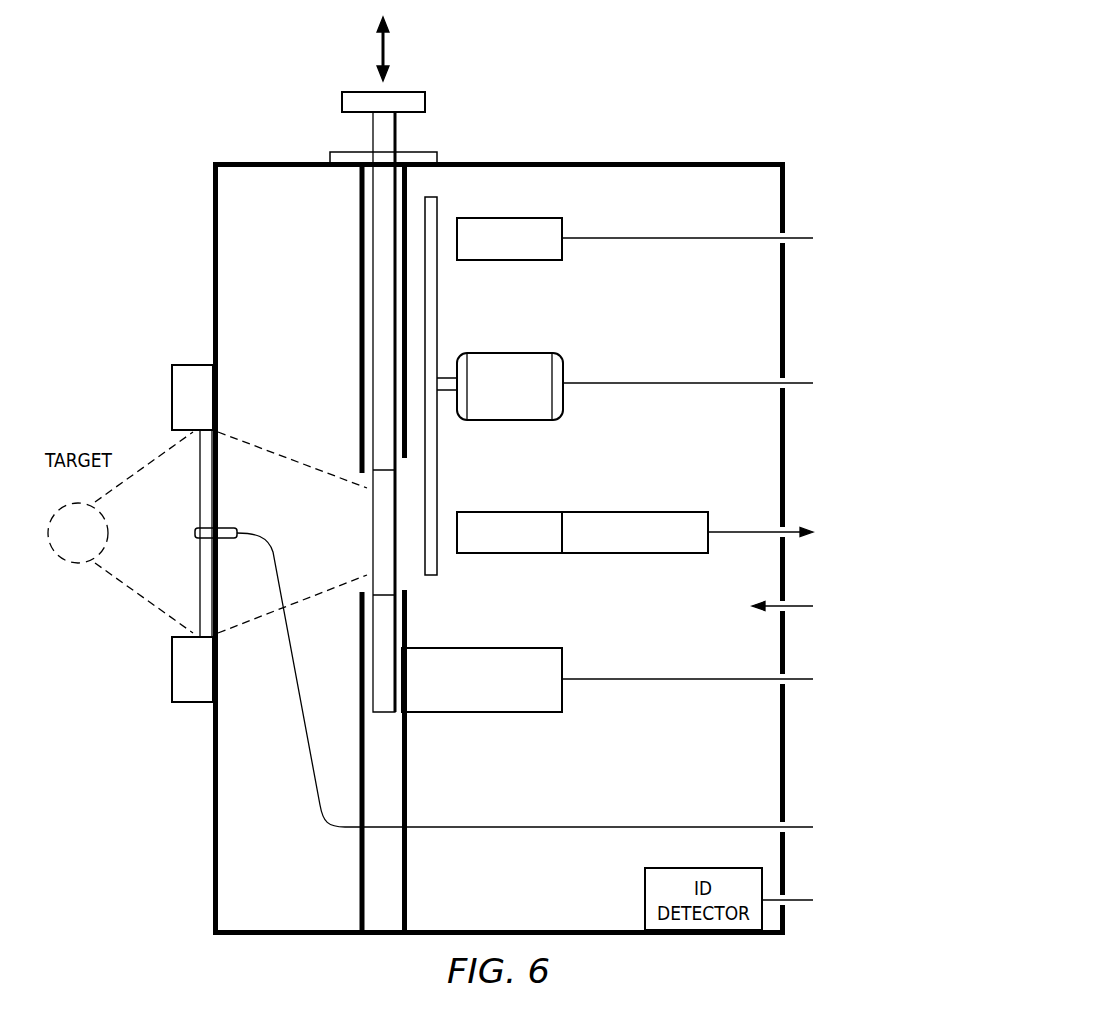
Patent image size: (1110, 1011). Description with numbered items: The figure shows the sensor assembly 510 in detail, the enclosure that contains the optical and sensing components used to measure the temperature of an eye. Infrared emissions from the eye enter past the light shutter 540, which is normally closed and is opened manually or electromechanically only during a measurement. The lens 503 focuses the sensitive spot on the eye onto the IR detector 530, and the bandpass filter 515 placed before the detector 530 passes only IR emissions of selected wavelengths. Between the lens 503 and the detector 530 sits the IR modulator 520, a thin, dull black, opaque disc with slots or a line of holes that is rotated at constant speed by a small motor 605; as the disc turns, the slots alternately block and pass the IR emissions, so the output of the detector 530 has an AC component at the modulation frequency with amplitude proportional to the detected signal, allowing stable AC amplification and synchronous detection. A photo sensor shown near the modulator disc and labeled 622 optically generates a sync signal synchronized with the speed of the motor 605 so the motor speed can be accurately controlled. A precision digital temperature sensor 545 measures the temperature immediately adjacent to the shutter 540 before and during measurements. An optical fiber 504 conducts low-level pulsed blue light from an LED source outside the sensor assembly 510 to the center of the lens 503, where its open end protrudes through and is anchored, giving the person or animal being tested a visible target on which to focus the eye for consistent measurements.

The sensor assembly 510 is at (636, 154).
The light shutter 540 is at (342, 103).
The IR modulator 520 is at (437, 450).
The detect (speed sync detector) 622 is at (530, 260).
The motor 605 is at (498, 353).
The bandpass filter 515 is at (488, 555).
The IR detector 530 is at (635, 555).
The precision digital temperature sensor 545 is at (483, 713).
The optical fiber 504 is at (483, 828).
The lens 503 is at (215, 508).